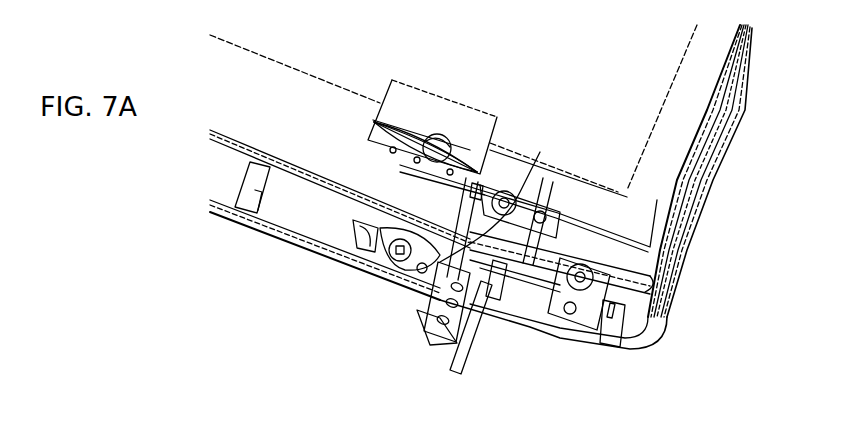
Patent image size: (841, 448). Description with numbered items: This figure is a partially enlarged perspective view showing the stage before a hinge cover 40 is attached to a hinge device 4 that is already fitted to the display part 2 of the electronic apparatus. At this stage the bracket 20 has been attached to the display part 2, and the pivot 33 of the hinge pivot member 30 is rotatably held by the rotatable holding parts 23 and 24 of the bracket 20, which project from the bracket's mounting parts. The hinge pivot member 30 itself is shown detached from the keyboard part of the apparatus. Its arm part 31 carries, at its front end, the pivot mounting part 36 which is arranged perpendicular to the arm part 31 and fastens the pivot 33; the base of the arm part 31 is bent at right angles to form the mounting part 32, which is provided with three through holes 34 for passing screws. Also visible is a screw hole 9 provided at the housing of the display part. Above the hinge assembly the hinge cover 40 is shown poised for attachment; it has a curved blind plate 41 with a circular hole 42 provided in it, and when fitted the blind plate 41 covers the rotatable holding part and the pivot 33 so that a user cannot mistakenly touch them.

The display part 2 is at (716, 187).
The hinge device 4 is at (268, 340).
The screw hole 9 is at (373, 274).
The bracket 20 is at (544, 175).
The rotatable holding part 23 is at (523, 263).
The rotatable holding part 24 is at (447, 277).
The hinge pivot member 30 is at (455, 346).
The arm part 31 is at (473, 342).
The mounting part 32 is at (448, 338).
The pivot 33 is at (556, 297).
The through hole 34 is at (447, 307).
The pivot mounting part 36 is at (522, 266).
The hinge cover 40 is at (443, 101).
The blind plate 41 is at (413, 103).
The circular hole 42 is at (440, 140).